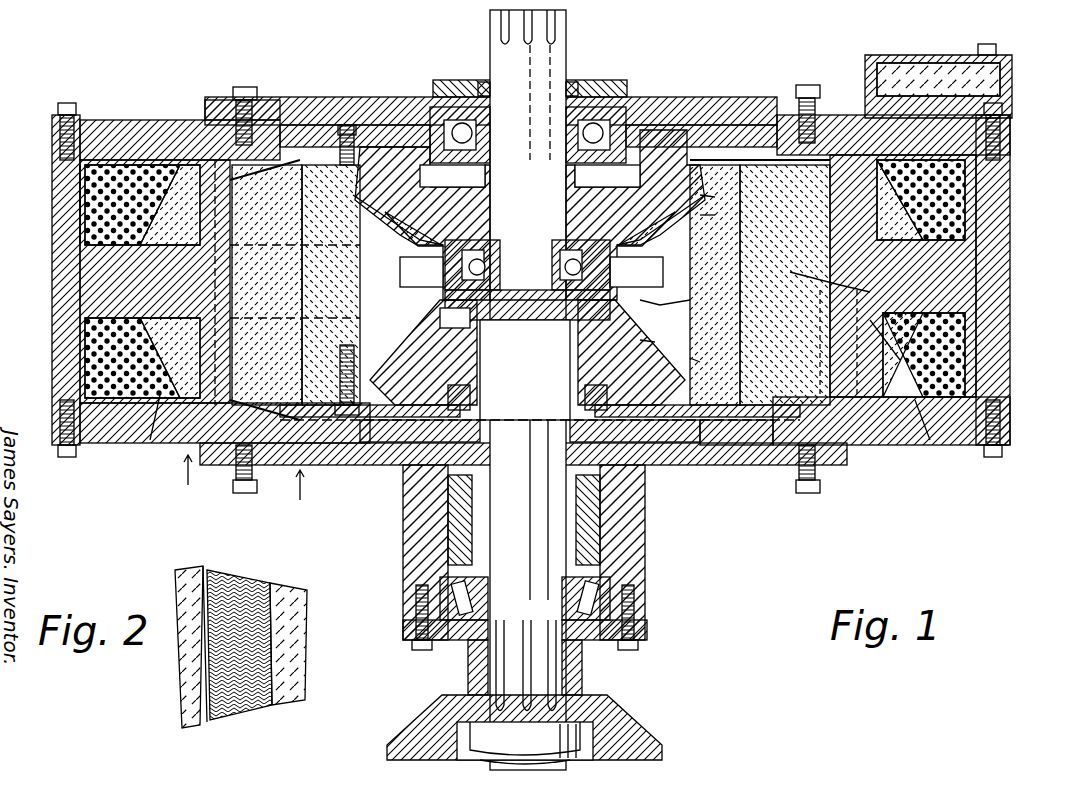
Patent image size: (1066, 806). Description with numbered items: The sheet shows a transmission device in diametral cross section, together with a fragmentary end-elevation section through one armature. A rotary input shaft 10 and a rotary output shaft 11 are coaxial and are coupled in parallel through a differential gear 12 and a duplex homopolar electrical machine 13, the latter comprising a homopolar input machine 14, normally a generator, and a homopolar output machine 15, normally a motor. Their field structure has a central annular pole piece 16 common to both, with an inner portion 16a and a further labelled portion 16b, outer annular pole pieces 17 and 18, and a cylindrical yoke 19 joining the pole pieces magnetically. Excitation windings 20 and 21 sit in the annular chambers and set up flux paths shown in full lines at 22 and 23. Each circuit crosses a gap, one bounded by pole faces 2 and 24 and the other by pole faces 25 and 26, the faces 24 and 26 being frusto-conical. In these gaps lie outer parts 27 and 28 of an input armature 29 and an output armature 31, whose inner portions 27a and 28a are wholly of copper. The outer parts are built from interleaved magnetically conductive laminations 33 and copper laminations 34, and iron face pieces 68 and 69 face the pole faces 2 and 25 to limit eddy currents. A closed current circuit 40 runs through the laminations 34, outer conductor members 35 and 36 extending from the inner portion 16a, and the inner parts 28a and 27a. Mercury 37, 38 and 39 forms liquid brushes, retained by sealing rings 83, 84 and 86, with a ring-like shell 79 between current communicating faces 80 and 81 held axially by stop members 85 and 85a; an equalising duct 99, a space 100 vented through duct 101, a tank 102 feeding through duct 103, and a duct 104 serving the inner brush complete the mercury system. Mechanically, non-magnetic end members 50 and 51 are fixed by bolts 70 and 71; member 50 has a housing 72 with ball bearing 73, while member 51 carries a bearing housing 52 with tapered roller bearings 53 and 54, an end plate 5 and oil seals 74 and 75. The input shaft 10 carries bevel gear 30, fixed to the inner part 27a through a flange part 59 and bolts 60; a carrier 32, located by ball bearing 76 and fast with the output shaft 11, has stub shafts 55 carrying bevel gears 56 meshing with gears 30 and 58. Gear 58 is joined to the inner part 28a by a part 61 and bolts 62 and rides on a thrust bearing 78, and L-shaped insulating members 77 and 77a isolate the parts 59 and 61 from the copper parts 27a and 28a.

In FIG. 1, the pole face 2 is at (218, 160).
In FIG. 1, the end plate 5 is at (420, 640).
In FIG. 1, the rotary input shaft 10 is at (566, 25).
In FIG. 1, the rotary output shaft 11 is at (565, 760).
In FIG. 1, the differential gear 12 is at (435, 82).
In FIG. 1, the duplex homopolar electrical machine 13 is at (53, 270).
In FIG. 1, the homopolar input machine 14 is at (53, 152).
In FIG. 1, the homopolar output machine 15 is at (45, 396).
In FIG. 1, the central annular pole piece 16 is at (990, 245).
In FIG. 1, the inner portion of central pole piece 16a is at (870, 292).
In FIG. 1, the housing wall portion 16b is at (1010, 275).
In FIG. 1, the outer annular pole piece 17 is at (125, 120).
In FIG. 1, the outer annular pole piece 18 is at (965, 445).
In FIG. 1, the cylindrical yoke 19 is at (1010, 330).
In FIG. 1, the excitation winding 20 is at (90, 168).
In FIG. 1, the excitation winding 21 is at (990, 385).
In FIG. 1, the magnetic flux path 22 is at (80, 192).
In FIG. 1, the magnetic flux path 23 is at (68, 340).
In FIG. 1, the pole face 24 is at (880, 245).
In FIG. 1, the pole face 25 is at (775, 460).
In FIG. 1, the pole face 26 is at (838, 343).
In FIG. 1, the outer part of input armature 27 is at (830, 115).
In FIG. 1, the inner portion of input armature 27a is at (750, 165).
In FIG. 1, the outer part of output armature 28 is at (845, 400).
In FIG. 1, the inner portion of output armature 28a is at (735, 440).
In FIG. 1, the input armature 29 is at (790, 160).
In FIG. 1, the bevel gear 30 is at (630, 110).
In FIG. 1, the output armature 31 is at (690, 360).
In FIG. 1, the cage or carrier 32 is at (455, 318).
In FIG. 2, the laminations 33 is at (250, 700).
In FIG. 2, the laminations 34 is at (240, 577).
In FIG. 1, the outer conductor member 35 is at (185, 195).
In FIG. 1, the outer conductor member 36 is at (895, 440).
In FIG. 1, the mercury 37 is at (850, 185).
In FIG. 1, the mercury 38 is at (870, 400).
In FIG. 1, the mercury 39 is at (305, 160).
In FIG. 1, the closed circuit 40 is at (165, 400).
In FIG. 1, the end member 50 is at (380, 97).
In FIG. 1, the end member 51 is at (360, 460).
In FIG. 1, the bearing housing 52 is at (405, 540).
In FIG. 1, the bearing 53 is at (524, 520).
In FIG. 1, the bearing 54 is at (466, 572).
In FIG. 1, the stub shafts 55 is at (531, 280).
In FIG. 1, the bevel gears 56 is at (395, 232).
In FIG. 1, the bevel gear 58 is at (440, 410).
In FIG. 1, the flange part 59 is at (720, 160).
In FIG. 1, the bolts 60 is at (360, 125).
In FIG. 1, the radially inwardly projecting part 61 is at (697, 410).
In FIG. 1, the bolts 62 is at (350, 470).
In FIG. 1, the iron face piece 68 is at (808, 85).
In FIG. 1, the iron face piece 69 is at (835, 460).
In FIG. 1, the bolts 70 is at (245, 88).
In FIG. 1, the bolts 71 is at (240, 480).
In FIG. 1, the housing 72 is at (420, 120).
In FIG. 1, the ball bearing 73 is at (530, 176).
In FIG. 1, the oil seal 74 is at (480, 90).
In FIG. 1, the oil seal 75 is at (445, 650).
In FIG. 1, the ball bearing 76 is at (533, 310).
In FIG. 1, the annular insulating member 77 is at (346, 125).
In FIG. 1, the annular insulating member 77a is at (710, 465).
In FIG. 1, the thrust bearing 78 is at (455, 395).
In FIG. 1, the shell 79 is at (691, 197).
In FIG. 1, the current communicating face 80 is at (690, 215).
In FIG. 1, the current communicating face 81 is at (262, 160).
In FIG. 1, the sealing ring 83 is at (300, 200).
In FIG. 1, the sealing ring 84 is at (715, 285).
In FIG. 1, the stop member 85 is at (660, 300).
In FIG. 1, the stop member 85a is at (760, 125).
In FIG. 1, the sealing ring 86 is at (760, 445).
In FIG. 1, the mercury equalising duct 99 is at (880, 340).
In FIG. 1, the space 100 is at (663, 345).
In FIG. 1, the vent duct 101 is at (745, 465).
In FIG. 1, the mercury tank or receiver 102 is at (918, 70).
In FIG. 1, the duct 103 is at (858, 130).
In FIG. 1, the duct 104 is at (748, 120).